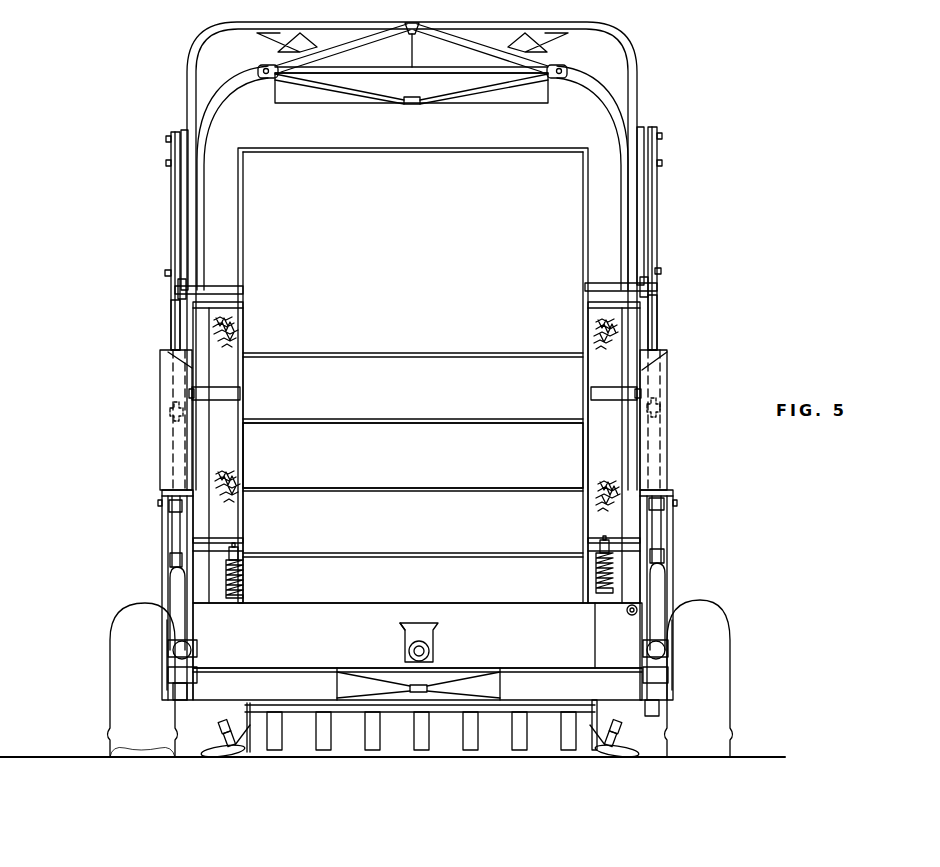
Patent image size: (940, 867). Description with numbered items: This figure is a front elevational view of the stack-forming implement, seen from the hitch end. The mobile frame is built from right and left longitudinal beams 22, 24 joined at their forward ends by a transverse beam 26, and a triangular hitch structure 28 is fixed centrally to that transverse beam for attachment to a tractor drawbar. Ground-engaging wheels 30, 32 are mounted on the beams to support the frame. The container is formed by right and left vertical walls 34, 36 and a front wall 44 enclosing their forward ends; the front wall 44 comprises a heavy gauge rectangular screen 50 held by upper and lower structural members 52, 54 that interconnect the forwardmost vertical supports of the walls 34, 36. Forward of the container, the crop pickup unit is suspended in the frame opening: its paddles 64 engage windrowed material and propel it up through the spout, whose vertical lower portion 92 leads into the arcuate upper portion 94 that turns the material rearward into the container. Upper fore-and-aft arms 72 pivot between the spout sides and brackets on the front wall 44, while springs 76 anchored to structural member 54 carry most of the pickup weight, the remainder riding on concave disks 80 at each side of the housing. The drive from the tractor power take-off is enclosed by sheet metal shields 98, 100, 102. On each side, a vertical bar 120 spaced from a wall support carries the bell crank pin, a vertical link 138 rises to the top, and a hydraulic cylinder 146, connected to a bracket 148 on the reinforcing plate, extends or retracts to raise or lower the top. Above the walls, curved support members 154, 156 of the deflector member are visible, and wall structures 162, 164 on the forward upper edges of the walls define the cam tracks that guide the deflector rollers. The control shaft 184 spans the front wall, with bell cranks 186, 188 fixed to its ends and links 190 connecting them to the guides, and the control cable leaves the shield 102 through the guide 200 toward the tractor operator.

The longitudinal beam 22 is at (187, 694).
The longitudinal beam 24 is at (653, 692).
The transverse beam 26 is at (618, 693).
The triangular hitch structure 28 is at (492, 688).
The ground-engaging wheel 30 is at (118, 662).
The ground-engaging wheel 32 is at (727, 657).
The vertical wall 34 is at (190, 333).
The vertical wall 36 is at (647, 322).
The front wall 44 is at (617, 451).
The rectangular screen 50 is at (640, 377).
The upper structural member 52 is at (226, 288).
The lower structural member 54 is at (604, 536).
The crop pickup and propelling paddles 64 is at (470, 745).
The fore-and-aft extending arms 72 is at (223, 393).
The springs 76 is at (238, 589).
The ground-engaging concave disks 80 is at (219, 756).
The lower portion of spout 92 is at (260, 453).
The arcuate upper portion of spout 94 is at (375, 162).
The sheet metal shield 98 is at (440, 645).
The sheet metal shield 100 is at (484, 608).
The drive shield 102 is at (598, 649).
The vertical bar 120 is at (162, 554).
The vertical link 138 is at (172, 311).
The hydraulic cylinder 146 is at (178, 591).
The bracket 148 is at (166, 651).
The curved support member 154 is at (244, 82).
The curved support member 156 is at (581, 80).
The wall structure 162 is at (643, 128).
The wall structure 164 is at (180, 134).
The shaft 184 is at (600, 284).
The bell crank 186 is at (667, 276).
The second bell crank 188 is at (163, 273).
The link 190 is at (173, 205).
The guide 200 is at (626, 610).